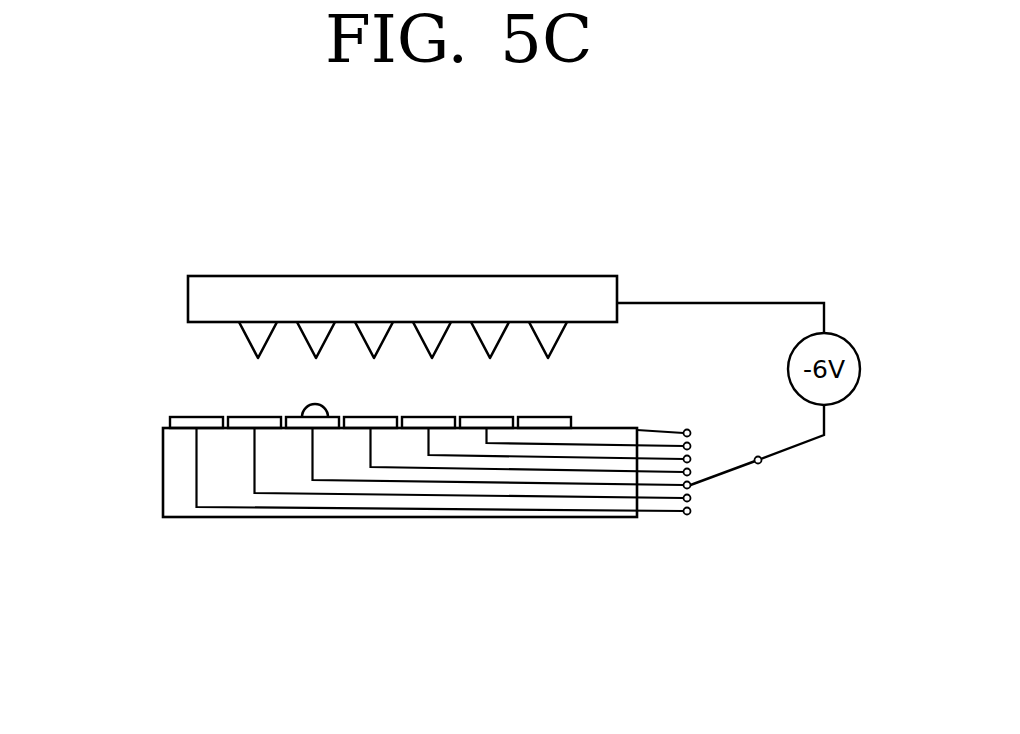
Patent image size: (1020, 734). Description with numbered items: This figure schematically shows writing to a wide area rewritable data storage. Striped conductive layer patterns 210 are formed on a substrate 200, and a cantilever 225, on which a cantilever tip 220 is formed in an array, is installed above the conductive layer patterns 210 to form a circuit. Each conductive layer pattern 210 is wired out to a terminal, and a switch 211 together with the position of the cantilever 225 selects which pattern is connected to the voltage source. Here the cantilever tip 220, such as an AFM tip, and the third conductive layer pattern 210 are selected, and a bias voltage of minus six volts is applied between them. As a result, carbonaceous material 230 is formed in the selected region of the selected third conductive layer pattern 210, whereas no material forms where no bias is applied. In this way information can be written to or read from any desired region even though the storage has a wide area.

The substrate 200 is at (172, 507).
The conductive layer patterns 210 is at (540, 421).
The switch 211 is at (736, 502).
The cantilever tip 220 is at (560, 338).
The cantilever 225 is at (557, 278).
The carbonaceous material 230 is at (306, 410).